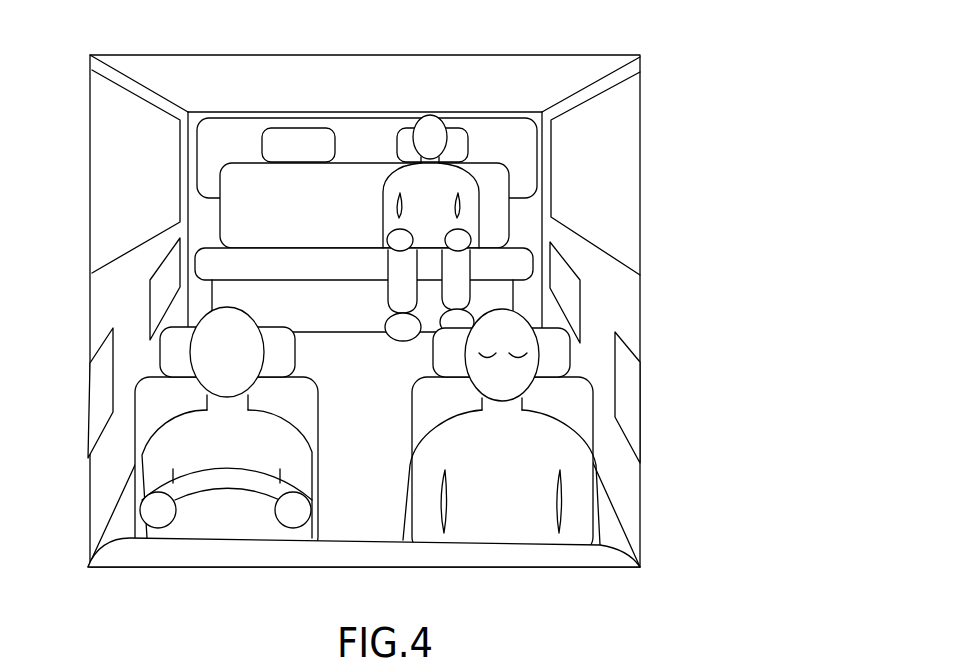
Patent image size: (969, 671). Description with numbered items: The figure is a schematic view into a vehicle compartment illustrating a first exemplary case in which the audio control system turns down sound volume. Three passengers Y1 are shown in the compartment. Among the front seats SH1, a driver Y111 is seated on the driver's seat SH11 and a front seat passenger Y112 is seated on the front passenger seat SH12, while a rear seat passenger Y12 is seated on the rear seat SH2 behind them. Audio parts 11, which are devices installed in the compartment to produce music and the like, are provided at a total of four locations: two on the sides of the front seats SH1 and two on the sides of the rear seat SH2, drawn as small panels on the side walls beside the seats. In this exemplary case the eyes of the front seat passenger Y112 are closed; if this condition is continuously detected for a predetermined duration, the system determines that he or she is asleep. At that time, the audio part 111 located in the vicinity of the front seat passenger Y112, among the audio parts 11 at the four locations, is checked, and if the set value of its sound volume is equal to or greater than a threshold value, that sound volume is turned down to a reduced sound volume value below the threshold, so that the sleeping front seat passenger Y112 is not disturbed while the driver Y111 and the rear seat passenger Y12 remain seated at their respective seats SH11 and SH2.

The audio part 11 is at (152, 268).
The audio part 111 is at (643, 393).
The front seats SH1 is at (394, 439).
The driver's seat SH11 is at (135, 441).
The front passenger seat SH12 is at (593, 443).
The rear seat SH2 is at (510, 185).
The passengers Y1 is at (394, 325).
The rear seat passenger Y12 is at (430, 115).
The driver Y111 is at (195, 322).
The front seat passenger Y112 is at (530, 315).